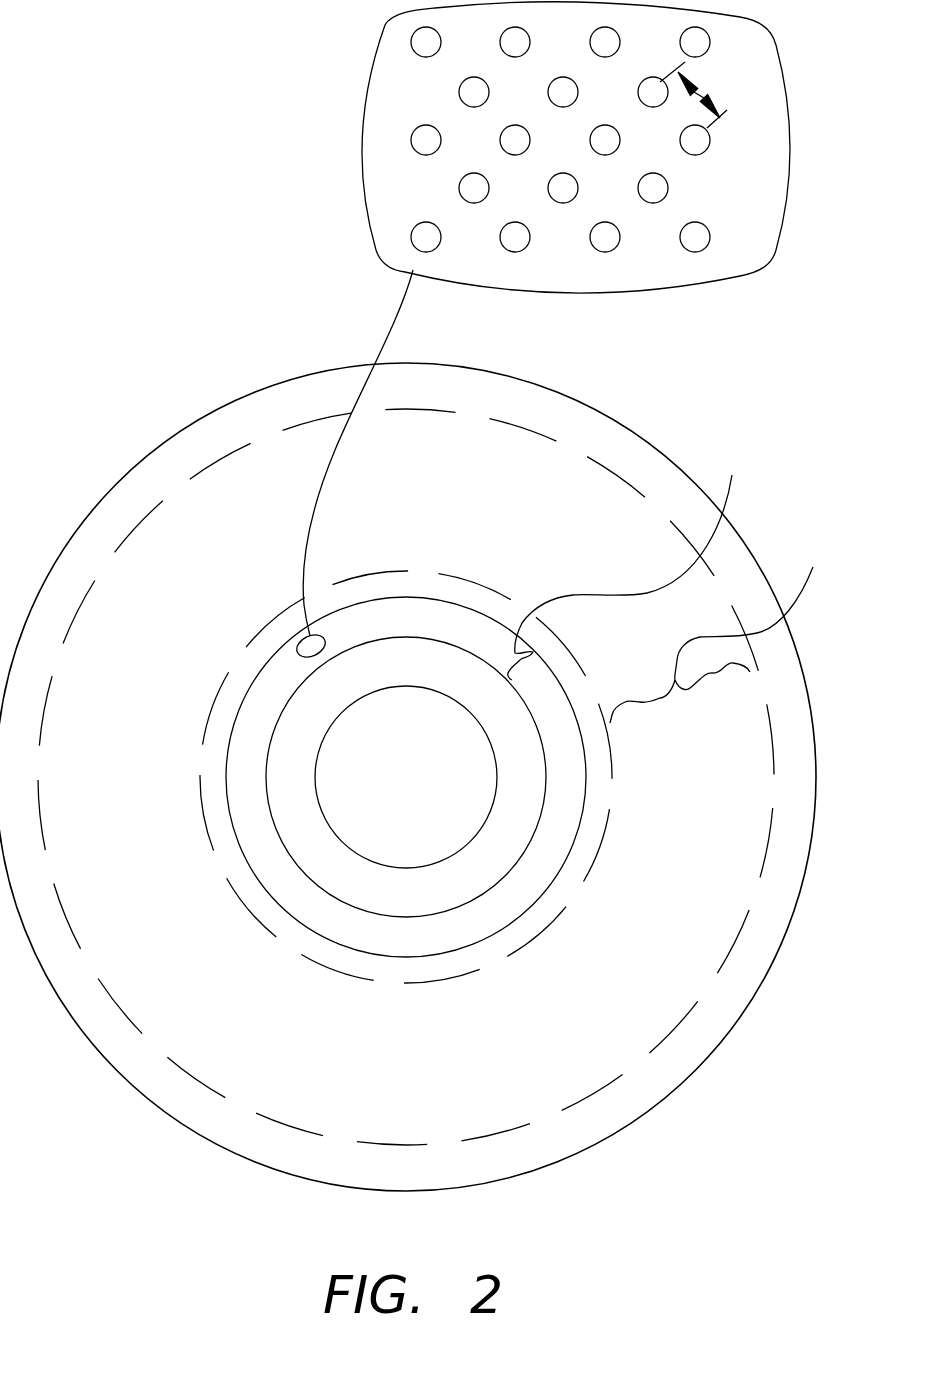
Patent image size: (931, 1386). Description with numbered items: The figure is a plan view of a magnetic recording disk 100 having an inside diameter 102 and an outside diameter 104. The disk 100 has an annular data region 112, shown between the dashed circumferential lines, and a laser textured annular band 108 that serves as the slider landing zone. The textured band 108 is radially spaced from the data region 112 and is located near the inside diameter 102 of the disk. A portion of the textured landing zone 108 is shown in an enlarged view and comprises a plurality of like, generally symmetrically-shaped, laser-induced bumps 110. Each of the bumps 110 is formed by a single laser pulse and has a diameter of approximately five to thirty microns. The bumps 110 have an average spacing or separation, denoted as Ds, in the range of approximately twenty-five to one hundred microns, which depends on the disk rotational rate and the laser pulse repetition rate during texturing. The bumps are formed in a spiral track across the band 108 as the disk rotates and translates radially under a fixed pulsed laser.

The magnetic recording disk 100 is at (253, 370).
The inside diameter 102 is at (466, 710).
The outside diameter 104 is at (557, 392).
The laser textured annular band 108 is at (630, 561).
The laser-induced bumps 110 is at (660, 188).
The annular data region 112 is at (721, 629).
The average spacing Ds is at (700, 90).